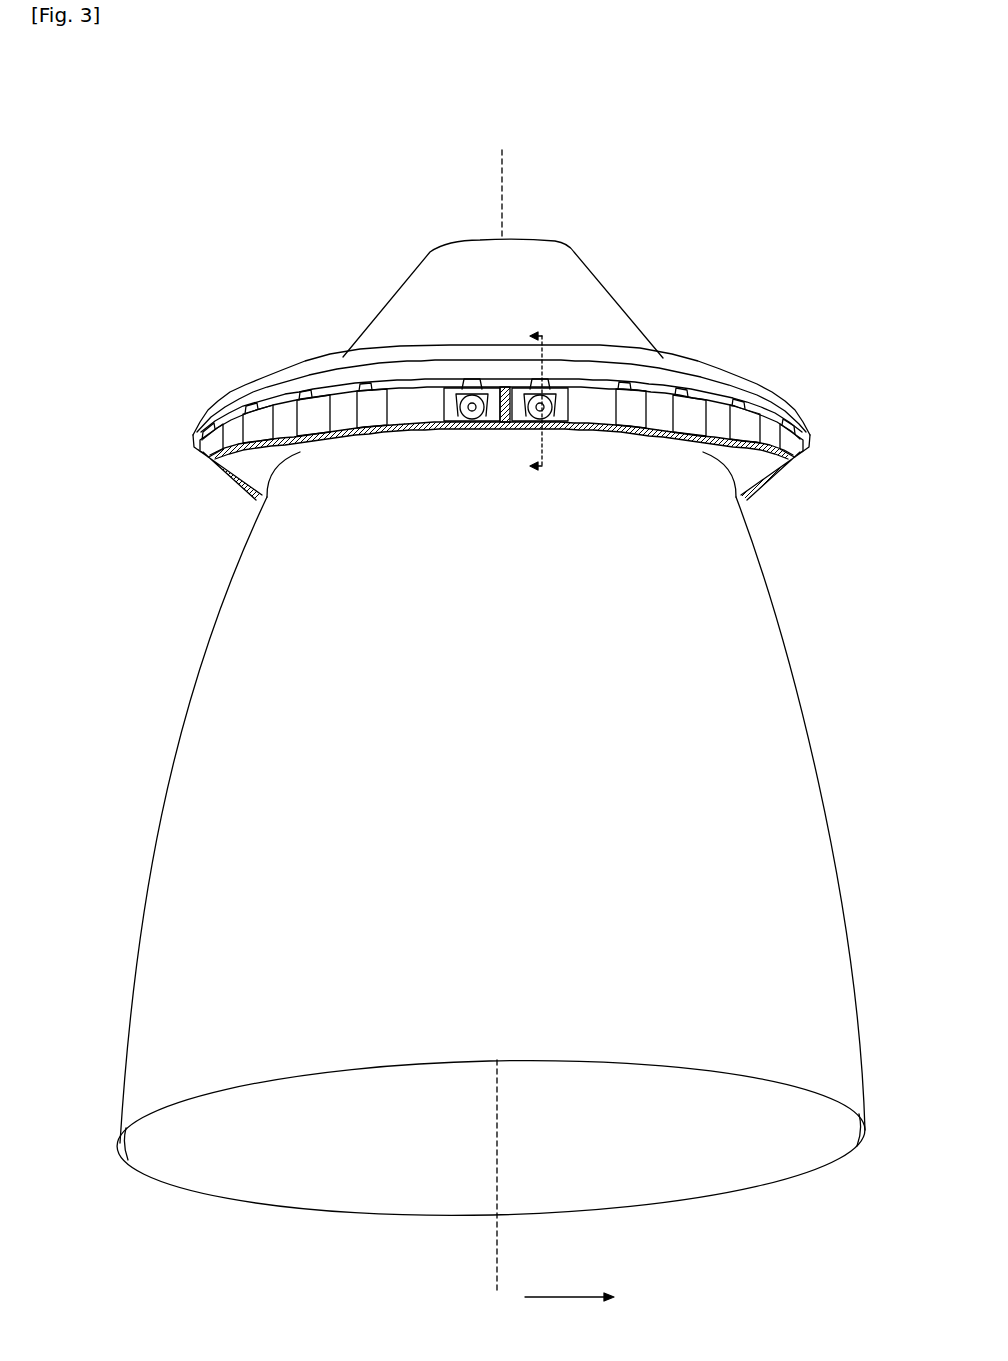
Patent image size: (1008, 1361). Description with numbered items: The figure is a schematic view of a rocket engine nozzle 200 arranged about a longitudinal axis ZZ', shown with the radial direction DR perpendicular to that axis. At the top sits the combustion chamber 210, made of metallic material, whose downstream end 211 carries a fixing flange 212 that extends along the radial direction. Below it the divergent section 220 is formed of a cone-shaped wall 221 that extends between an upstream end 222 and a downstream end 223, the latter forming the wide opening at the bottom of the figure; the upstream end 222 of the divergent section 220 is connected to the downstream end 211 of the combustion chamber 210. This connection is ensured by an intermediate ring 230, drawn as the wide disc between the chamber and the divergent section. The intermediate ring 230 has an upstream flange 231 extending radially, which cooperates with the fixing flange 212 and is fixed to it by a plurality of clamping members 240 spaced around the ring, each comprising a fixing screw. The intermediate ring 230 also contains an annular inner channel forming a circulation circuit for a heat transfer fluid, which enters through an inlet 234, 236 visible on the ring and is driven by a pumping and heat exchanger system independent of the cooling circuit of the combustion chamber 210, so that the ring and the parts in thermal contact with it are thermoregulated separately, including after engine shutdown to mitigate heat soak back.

The nozzle 200 is at (318, 150).
The combustion chamber 210 is at (458, 242).
The downstream end of the combustion chamber 211 is at (640, 339).
The fixing flange 212 is at (765, 397).
The divergent section 220 is at (480, 860).
The cone-shaped wall 221 is at (800, 749).
The upstream end of the divergent section 222 is at (260, 490).
The downstream end of the divergent section 223 is at (124, 1120).
The intermediate ring 230 is at (478, 428).
The upstream flange 231 is at (800, 436).
The inlet 234 is at (472, 428).
The inlet 236 is at (550, 433).
The clamping members 240 is at (365, 425).